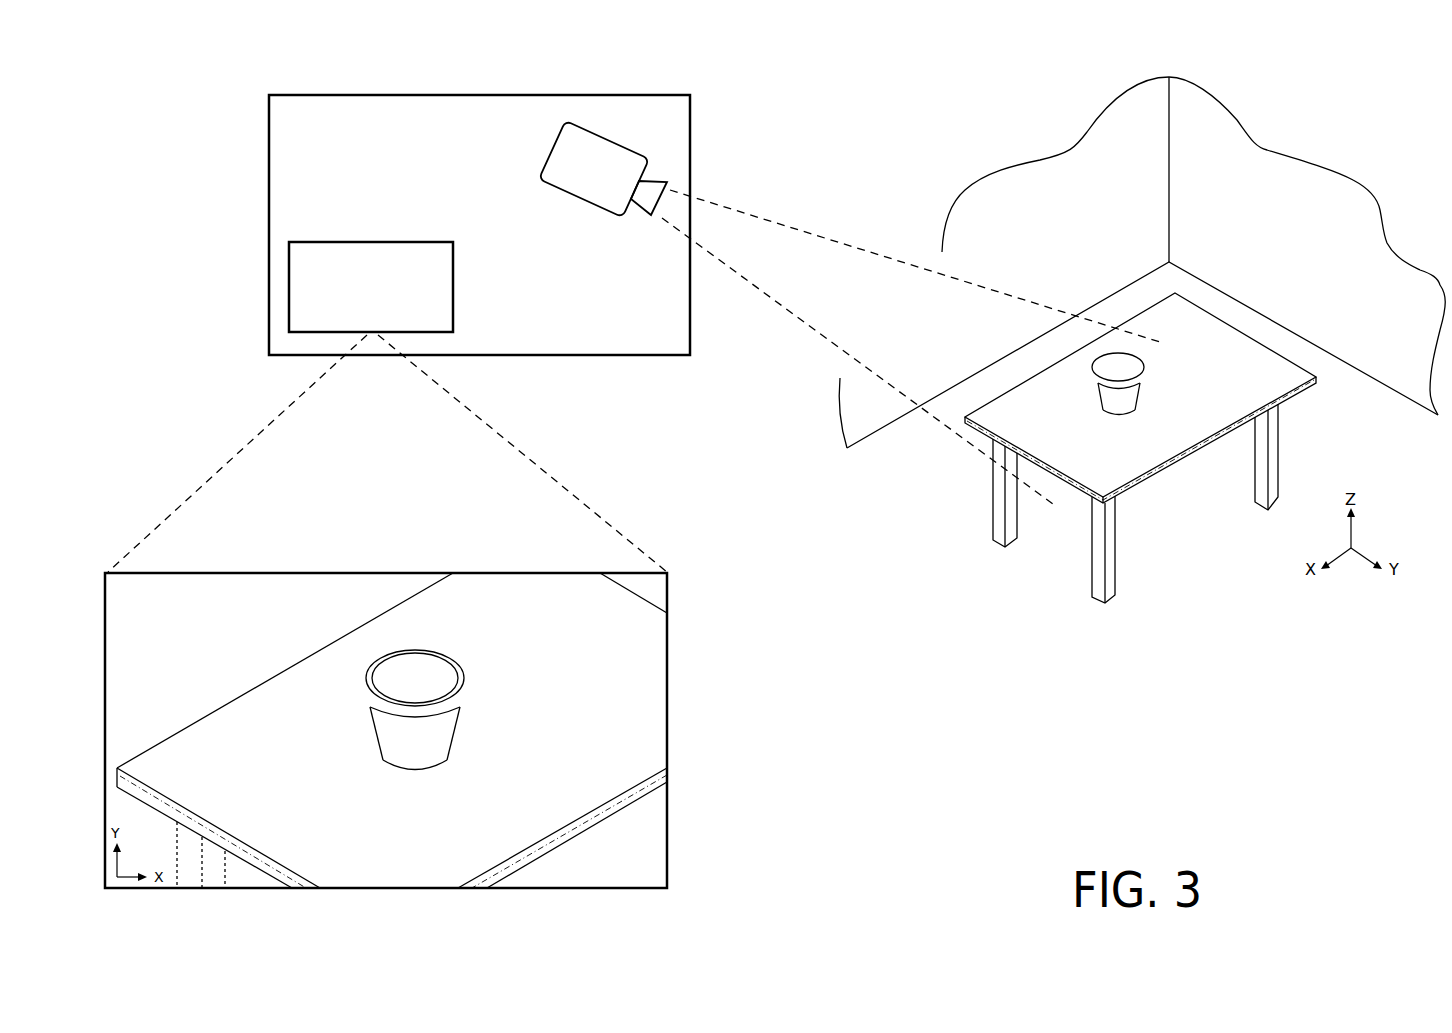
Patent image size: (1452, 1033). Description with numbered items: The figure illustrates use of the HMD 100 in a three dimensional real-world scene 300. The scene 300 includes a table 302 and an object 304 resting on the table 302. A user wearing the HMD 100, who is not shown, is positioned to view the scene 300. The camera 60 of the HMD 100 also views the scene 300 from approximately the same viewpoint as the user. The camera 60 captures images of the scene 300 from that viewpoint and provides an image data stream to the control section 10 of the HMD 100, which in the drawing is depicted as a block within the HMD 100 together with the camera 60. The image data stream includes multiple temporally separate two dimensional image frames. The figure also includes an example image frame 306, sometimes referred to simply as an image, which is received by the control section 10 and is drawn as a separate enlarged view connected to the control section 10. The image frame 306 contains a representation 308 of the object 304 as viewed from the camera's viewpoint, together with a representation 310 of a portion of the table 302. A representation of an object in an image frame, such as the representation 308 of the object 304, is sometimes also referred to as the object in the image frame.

The HMD 100 is at (457, 167).
The control section 10 is at (440, 316).
The camera 60 is at (608, 181).
The three dimensional real-world scene 300 is at (1336, 136).
The table 302 is at (1175, 462).
The object 304 is at (1142, 393).
The image frame 306 is at (669, 827).
The representation of the object 308 is at (450, 732).
The representation of a portion of the table 310 is at (278, 693).